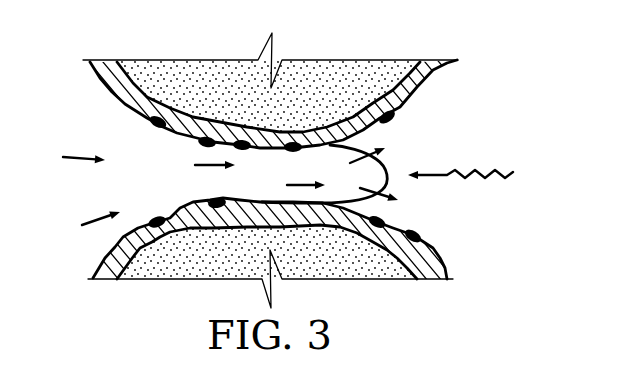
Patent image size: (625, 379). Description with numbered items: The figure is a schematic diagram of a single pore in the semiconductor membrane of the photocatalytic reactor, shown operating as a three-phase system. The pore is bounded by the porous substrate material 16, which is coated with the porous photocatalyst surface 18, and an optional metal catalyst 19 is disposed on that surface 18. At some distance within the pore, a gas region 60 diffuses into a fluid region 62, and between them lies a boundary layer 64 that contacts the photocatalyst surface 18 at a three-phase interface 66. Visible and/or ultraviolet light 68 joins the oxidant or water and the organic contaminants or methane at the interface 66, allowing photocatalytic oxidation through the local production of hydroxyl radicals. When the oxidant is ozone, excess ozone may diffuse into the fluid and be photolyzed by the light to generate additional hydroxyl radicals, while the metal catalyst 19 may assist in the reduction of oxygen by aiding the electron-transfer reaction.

The porous substrate material 16 is at (334, 68).
The porous photocatalyst surface 18 is at (395, 99).
The metal catalyst 19 is at (151, 122).
The gas region 60 is at (163, 186).
The fluid region 62 is at (453, 151).
The boundary layer 64 is at (392, 187).
The three-phase interface 66 is at (328, 146).
The visible and/or ultraviolet light 68 is at (515, 172).